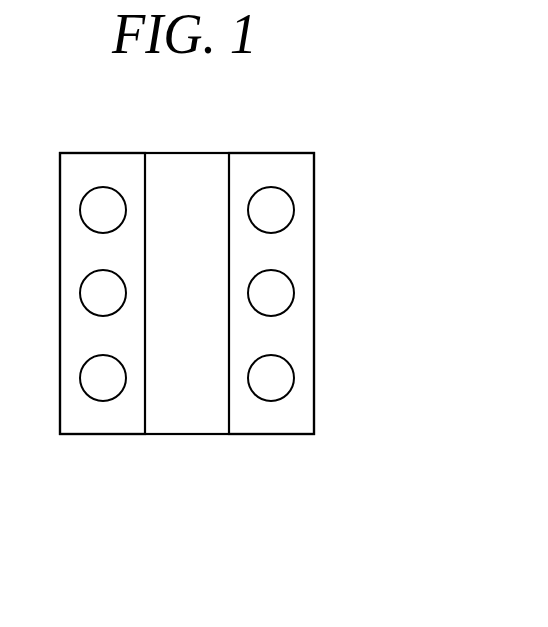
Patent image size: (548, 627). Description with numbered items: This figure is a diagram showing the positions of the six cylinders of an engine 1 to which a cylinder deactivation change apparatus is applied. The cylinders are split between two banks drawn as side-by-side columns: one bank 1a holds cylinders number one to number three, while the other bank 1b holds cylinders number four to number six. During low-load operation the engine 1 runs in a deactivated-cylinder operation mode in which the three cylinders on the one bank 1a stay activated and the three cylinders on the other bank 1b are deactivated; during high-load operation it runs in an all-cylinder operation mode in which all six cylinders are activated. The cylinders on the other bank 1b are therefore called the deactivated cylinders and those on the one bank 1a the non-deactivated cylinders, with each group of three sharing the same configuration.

The engine 1 is at (370, 155).
The bank 1a is at (103, 435).
The other bank 1b is at (288, 435).